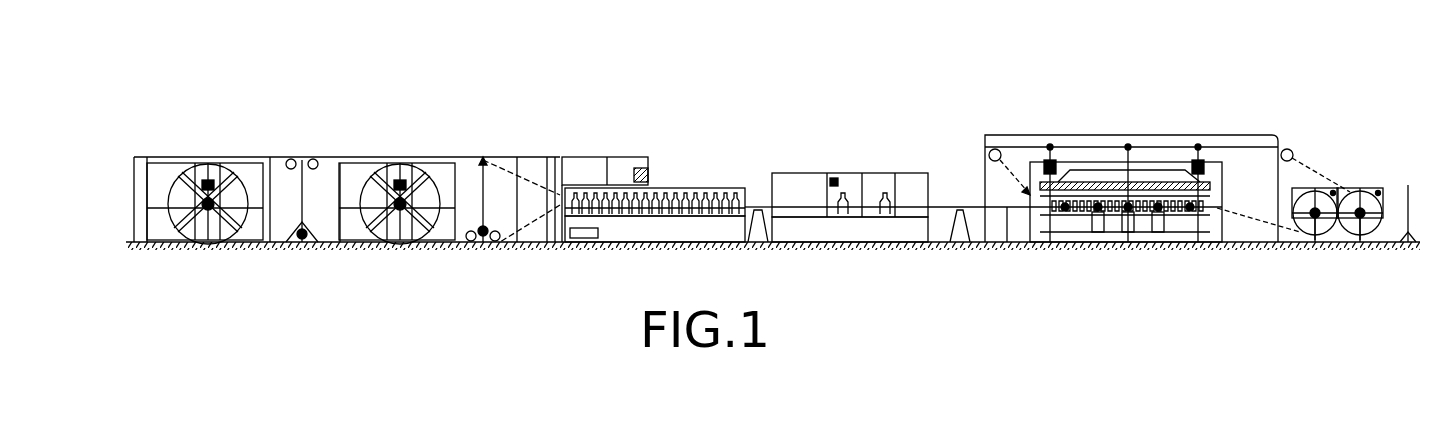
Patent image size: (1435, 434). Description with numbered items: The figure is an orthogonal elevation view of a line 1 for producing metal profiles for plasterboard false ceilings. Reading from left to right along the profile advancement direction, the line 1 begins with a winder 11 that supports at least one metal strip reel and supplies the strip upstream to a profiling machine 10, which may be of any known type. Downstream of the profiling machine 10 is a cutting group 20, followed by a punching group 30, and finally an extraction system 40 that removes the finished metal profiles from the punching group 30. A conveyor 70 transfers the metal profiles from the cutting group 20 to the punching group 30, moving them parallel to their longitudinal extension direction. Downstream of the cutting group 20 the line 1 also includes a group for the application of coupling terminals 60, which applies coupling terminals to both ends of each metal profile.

The line 1 is at (248, 68).
The winder 11 is at (215, 268).
The profiling machine 10 is at (670, 156).
The cutting group 20 is at (860, 156).
The punching group 30 is at (1200, 139).
The group for the application of coupling terminals 60 is at (1200, 139).
The extraction system 40 is at (1100, 118).
The conveyor 70 is at (1008, 244).